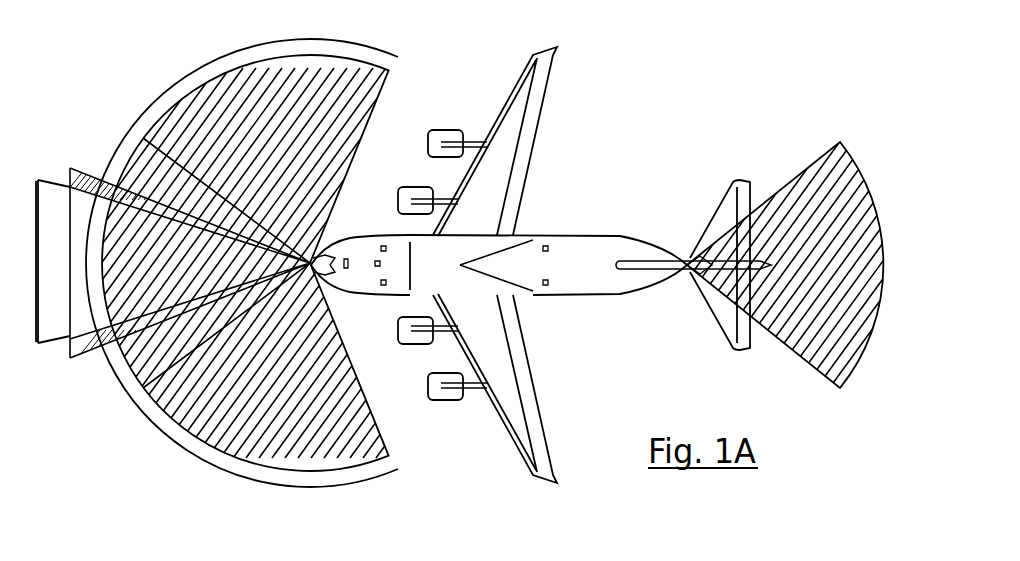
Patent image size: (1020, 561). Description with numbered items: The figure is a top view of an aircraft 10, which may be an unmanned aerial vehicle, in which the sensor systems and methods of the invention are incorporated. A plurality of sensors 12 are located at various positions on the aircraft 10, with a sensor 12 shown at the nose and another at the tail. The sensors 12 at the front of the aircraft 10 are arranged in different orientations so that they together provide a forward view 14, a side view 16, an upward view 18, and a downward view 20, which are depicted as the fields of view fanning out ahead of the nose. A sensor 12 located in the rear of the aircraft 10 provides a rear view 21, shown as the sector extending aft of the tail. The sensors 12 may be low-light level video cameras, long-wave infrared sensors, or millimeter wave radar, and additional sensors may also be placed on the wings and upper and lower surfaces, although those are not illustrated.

The aircraft 10 is at (538, 47).
The sensors 12 is at (335, 247).
The forward view 14 is at (99, 160).
The side view 16 is at (253, 53).
The upward view 18 is at (340, 67).
The downward view 20 is at (46, 178).
The rear view 21 is at (807, 172).